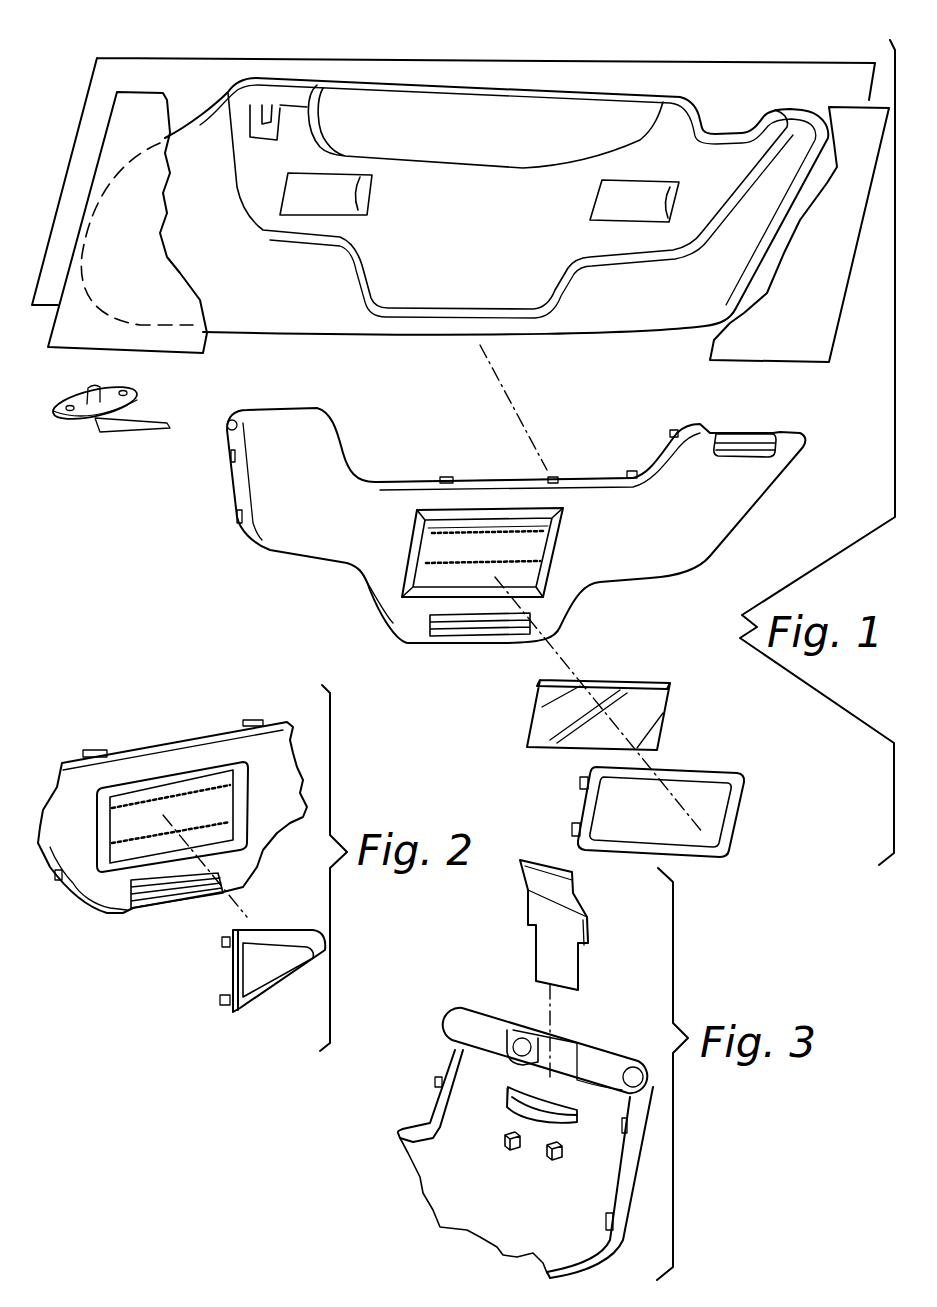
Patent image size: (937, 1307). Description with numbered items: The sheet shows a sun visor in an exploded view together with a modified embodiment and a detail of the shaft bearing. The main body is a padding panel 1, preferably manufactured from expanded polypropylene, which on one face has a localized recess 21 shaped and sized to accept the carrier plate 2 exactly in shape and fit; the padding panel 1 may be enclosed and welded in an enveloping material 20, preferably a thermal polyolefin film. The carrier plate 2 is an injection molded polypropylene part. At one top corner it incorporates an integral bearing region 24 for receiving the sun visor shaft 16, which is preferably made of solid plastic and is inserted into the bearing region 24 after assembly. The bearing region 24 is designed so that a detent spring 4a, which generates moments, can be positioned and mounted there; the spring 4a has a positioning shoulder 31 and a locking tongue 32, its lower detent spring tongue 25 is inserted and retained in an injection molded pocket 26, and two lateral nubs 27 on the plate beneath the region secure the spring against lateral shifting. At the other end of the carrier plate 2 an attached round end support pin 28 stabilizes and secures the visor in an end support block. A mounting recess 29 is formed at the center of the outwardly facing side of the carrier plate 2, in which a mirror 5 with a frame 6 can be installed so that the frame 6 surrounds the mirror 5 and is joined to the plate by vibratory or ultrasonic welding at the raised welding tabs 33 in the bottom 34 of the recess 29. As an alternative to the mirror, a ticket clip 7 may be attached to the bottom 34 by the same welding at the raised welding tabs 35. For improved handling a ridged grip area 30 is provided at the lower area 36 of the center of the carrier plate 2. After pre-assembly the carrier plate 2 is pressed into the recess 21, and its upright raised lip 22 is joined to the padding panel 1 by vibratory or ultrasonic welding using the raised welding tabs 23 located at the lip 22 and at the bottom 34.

In FIG. 1, the padding panel 1 is at (605, 332).
In FIG. 1, the carrier plate 2 is at (765, 505).
In FIG. 3, the detent spring 4a is at (588, 927).
In FIG. 1, the mirror 5 is at (527, 730).
In FIG. 1, the frame 6 is at (718, 767).
In FIG. 2, the ticket clip 7 is at (258, 993).
In FIG. 1, the sun visor shaft 16 is at (125, 428).
In FIG. 1, the enveloping material 20 is at (539, 60).
In FIG. 1, the recess 21 is at (263, 115).
In FIG. 1, the lip 22 is at (380, 478).
In FIG. 3, the lip 22 is at (633, 1183).
In FIG. 1, the welding tabs 23 is at (447, 478).
In FIG. 2, the welding tabs 23 is at (90, 752).
In FIG. 3, the welding tabs 23 is at (620, 1127).
In FIG. 3, the bearing region 24 is at (597, 1057).
In FIG. 3, the lower detent spring tongue 25 is at (588, 970).
In FIG. 3, the pocket 26 is at (505, 1111).
In FIG. 3, the lateral nubs 27 is at (503, 1145).
In FIG. 1, the end support pin 28 is at (755, 410).
In FIG. 1, the mounting recess 29 is at (553, 563).
In FIG. 2, the mounting recess 29 is at (192, 813).
In FIG. 1, the ridged grip area 30 is at (440, 633).
In FIG. 2, the ridged grip area 30 is at (177, 890).
In FIG. 3, the positioning shoulder 31 is at (528, 927).
In FIG. 3, the locking tongue 32 is at (548, 963).
In FIG. 1, the welding tabs 33 is at (440, 567).
In FIG. 2, the welding tabs 33 is at (143, 800).
In FIG. 1, the bottom 34 is at (430, 550).
In FIG. 2, the welding tabs 35 is at (220, 998).
In FIG. 2, the lower area 36 is at (108, 895).